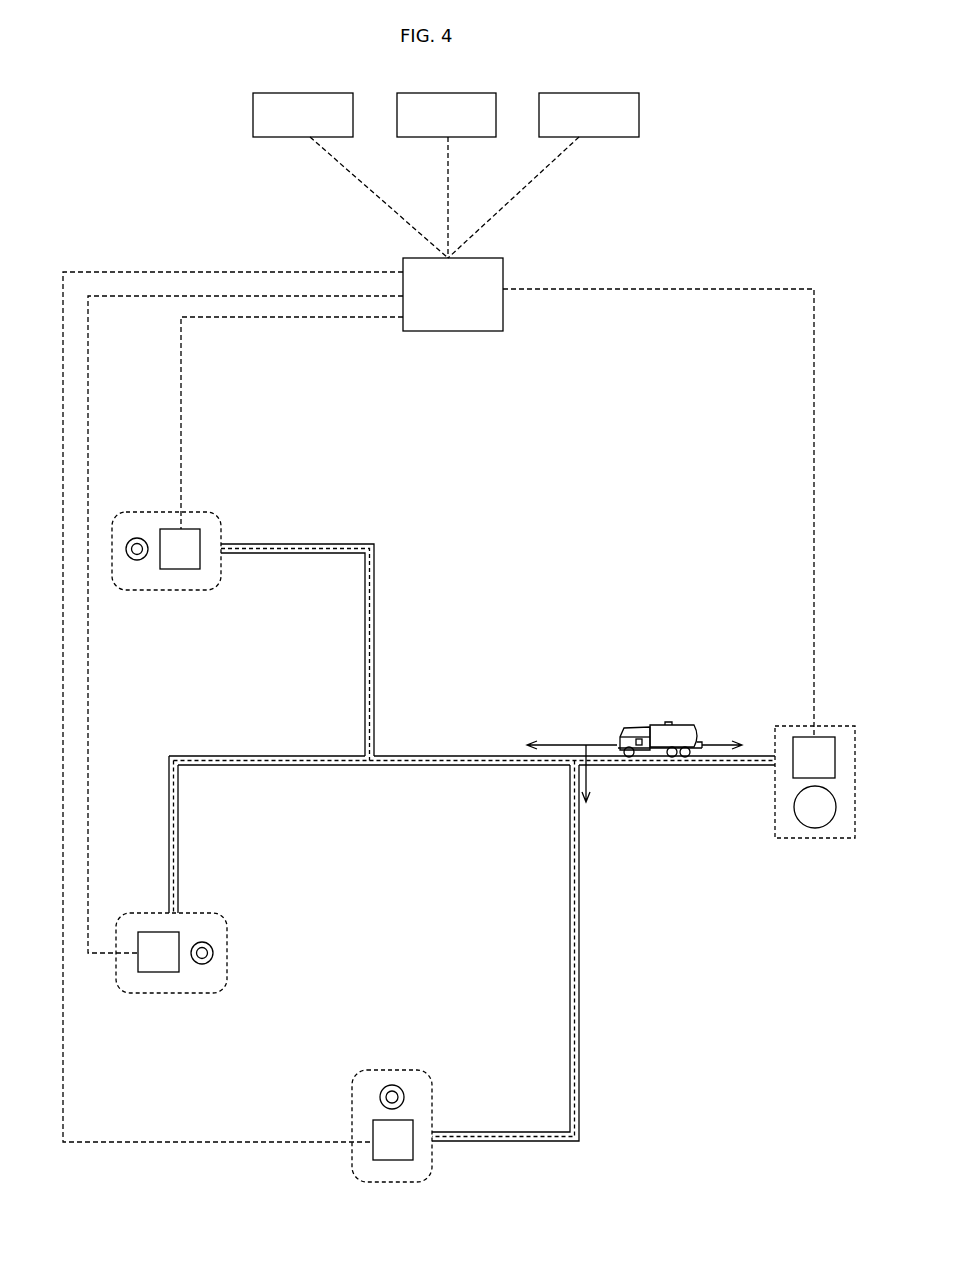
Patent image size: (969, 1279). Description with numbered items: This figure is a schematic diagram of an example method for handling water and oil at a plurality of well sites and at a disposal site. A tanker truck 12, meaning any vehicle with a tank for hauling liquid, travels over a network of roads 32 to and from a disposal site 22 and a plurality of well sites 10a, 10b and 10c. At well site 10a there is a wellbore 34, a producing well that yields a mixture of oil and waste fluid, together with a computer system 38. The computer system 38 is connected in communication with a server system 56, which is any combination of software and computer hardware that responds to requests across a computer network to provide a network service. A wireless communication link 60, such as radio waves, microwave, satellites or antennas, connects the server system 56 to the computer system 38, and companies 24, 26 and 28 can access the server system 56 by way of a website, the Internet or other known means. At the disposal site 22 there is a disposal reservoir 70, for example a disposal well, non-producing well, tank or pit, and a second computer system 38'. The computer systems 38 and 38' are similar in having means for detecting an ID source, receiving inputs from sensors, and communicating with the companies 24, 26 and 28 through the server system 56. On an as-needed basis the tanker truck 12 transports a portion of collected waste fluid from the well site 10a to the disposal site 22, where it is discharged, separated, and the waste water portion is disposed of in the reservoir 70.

The company 24 is at (282, 93).
The company 26 is at (428, 93).
The company 28 is at (597, 93).
The server system 56 is at (483, 258).
The wireless communication link 60 is at (181, 392).
The well site 10a is at (193, 512).
The well site 10b is at (193, 913).
The well site 10c is at (432, 1105).
The wellbore 34 is at (137, 560).
The computer system 38 is at (210, 580).
The second computer system 38' is at (824, 714).
The network of roads 32 is at (374, 622).
The tanker truck 12 is at (662, 725).
The disposal site 22 is at (790, 726).
The disposal reservoir 70 is at (793, 807).